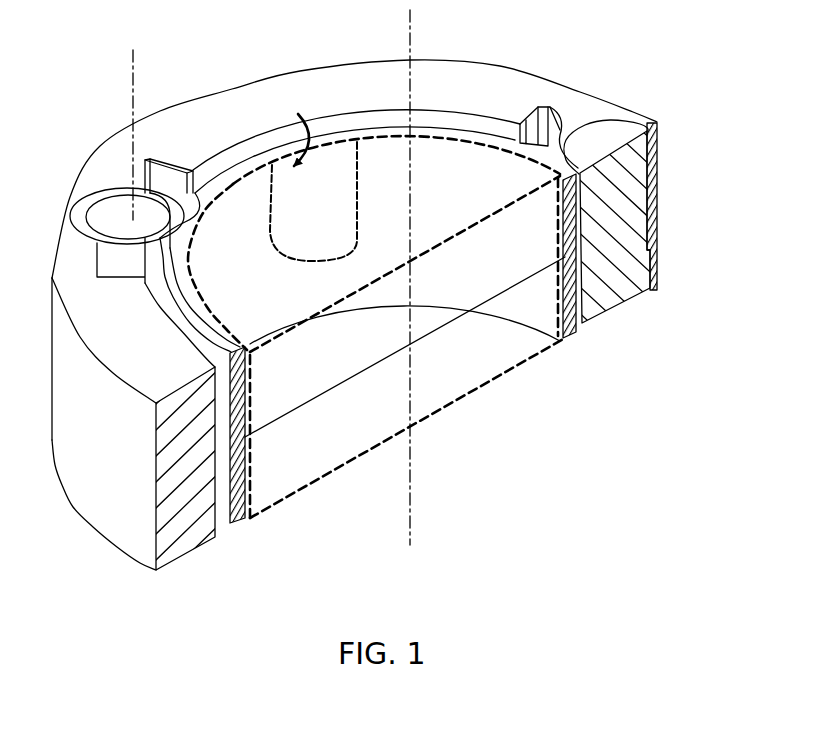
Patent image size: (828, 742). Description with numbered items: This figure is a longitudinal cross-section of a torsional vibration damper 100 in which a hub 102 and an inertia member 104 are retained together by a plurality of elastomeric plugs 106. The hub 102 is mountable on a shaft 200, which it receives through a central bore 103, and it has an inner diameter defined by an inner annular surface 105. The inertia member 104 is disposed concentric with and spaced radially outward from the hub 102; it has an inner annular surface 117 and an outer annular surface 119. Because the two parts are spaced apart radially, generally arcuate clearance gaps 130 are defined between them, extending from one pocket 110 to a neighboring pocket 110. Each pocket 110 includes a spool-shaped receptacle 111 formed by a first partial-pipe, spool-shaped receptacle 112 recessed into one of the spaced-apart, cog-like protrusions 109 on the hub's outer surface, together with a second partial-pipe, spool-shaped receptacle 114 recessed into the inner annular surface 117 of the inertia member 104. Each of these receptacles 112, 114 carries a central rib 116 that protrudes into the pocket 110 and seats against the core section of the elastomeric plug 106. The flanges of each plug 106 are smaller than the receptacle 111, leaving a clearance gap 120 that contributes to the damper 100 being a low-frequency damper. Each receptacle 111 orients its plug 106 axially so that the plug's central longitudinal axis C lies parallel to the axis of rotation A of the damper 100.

The torsional vibration damper 100 is at (354, 315).
The hub 102 is at (243, 452).
The central bore 103 is at (285, 128).
The inertia member 104 is at (232, 103).
The inner annular surface 105 is at (339, 249).
The elastomeric plug 106 is at (105, 213).
The protrusion 109 is at (158, 263).
The pocket 110 is at (303, 163).
The spool-shaped receptacle 111 is at (434, 156).
The first partial-pipe, spool-shaped receptacle 112 is at (563, 145).
The second partial-pipe, spool-shaped receptacle 114 is at (638, 113).
The central rib 116 is at (653, 212).
The inner annular surface 117 is at (340, 121).
The outer annular surface 119 is at (116, 451).
The clearance gap 120 is at (577, 193).
The clearance gap 130 is at (224, 528).
The shaft 200 is at (538, 360).
The axis of rotation A is at (410, 497).
The central longitudinal axis C is at (133, 72).